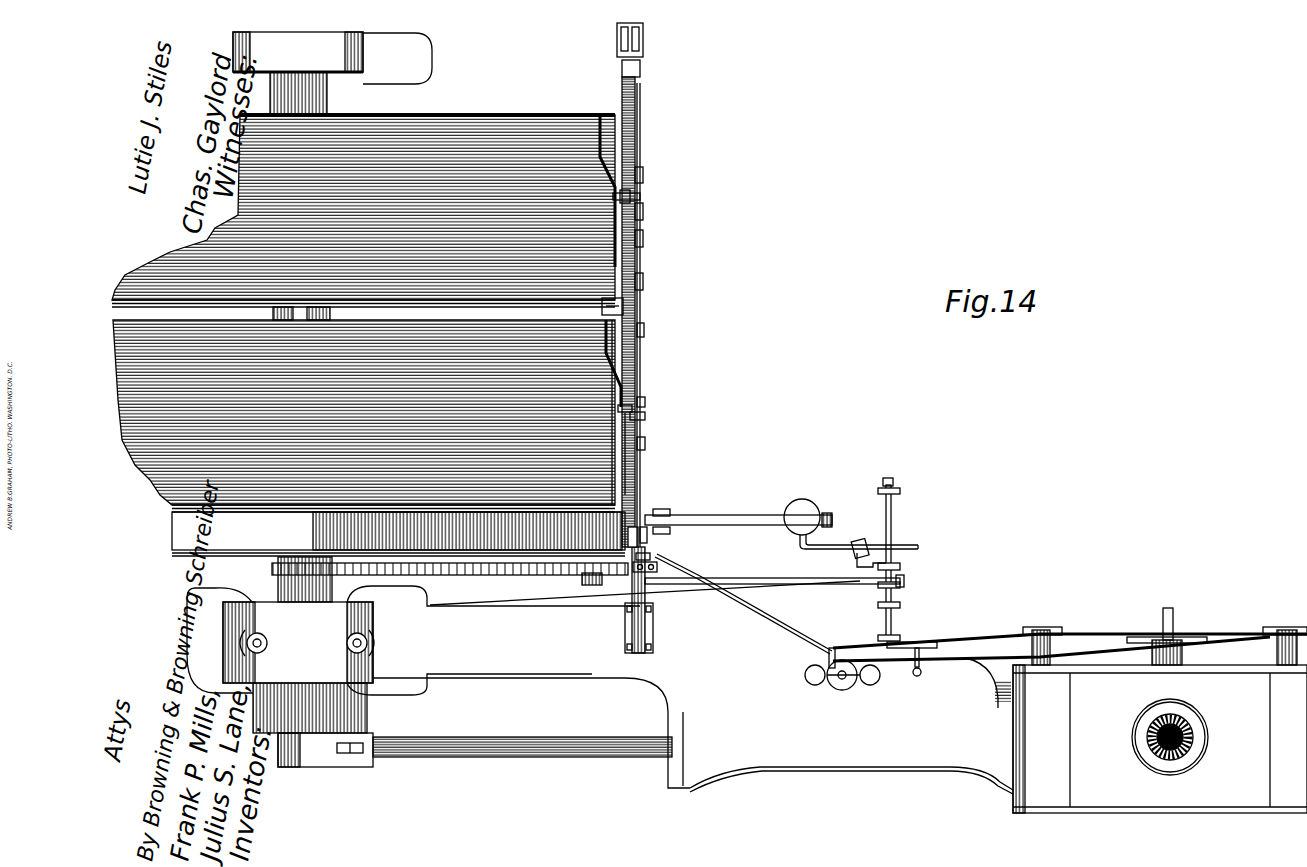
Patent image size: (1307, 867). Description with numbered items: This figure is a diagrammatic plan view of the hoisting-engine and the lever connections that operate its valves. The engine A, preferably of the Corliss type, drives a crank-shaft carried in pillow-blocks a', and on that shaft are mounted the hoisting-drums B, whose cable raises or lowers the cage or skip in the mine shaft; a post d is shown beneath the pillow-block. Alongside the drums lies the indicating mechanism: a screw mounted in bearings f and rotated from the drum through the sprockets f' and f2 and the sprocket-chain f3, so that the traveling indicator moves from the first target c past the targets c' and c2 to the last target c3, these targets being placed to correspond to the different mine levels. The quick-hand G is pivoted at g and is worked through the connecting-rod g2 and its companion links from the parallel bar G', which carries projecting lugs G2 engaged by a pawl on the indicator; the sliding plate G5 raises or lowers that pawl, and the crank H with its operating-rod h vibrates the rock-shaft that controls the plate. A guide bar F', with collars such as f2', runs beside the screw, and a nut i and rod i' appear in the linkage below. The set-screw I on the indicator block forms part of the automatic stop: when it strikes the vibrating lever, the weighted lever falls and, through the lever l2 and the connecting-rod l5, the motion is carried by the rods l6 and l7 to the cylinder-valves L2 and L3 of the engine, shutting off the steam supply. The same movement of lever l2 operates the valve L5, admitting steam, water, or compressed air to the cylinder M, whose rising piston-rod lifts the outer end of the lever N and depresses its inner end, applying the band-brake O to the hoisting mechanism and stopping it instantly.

The pillow-blocks a' is at (332, 58).
The post d is at (298, 93).
The hoisting-drums B is at (363, 313).
The band-brake O is at (398, 534).
The sprocket-chain f3 is at (503, 563).
The sprocket f' is at (298, 672).
The engine A is at (600, 687).
The crank H is at (640, 557).
The nut i is at (584, 607).
The sprocket f2 is at (656, 591).
The bearings f is at (648, 285).
The guide bar F' is at (620, 119).
The target c is at (650, 311).
The set-screw I is at (640, 194).
The target c' is at (653, 217).
The target c2 is at (643, 243).
The target c3 is at (643, 278).
The connecting-rod g2 is at (644, 343).
The collar f2' is at (660, 399).
The sliding plate G5 is at (603, 290).
The quick-hand G is at (588, 363).
The pivot g is at (623, 357).
The parallel bar G' is at (598, 452).
The projecting lugs G2 is at (630, 427).
The lever N is at (718, 513).
The cylinder M is at (798, 510).
The valve L5 is at (857, 541).
The operating-rod h is at (743, 604).
The rod i' is at (774, 572).
The connecting-rod l5 is at (860, 650).
The lever l2 is at (900, 637).
The rod l6 is at (957, 647).
The rod l7 is at (967, 660).
The cylinder-valve L2 is at (1042, 623).
The cylinder-valve L3 is at (1283, 623).